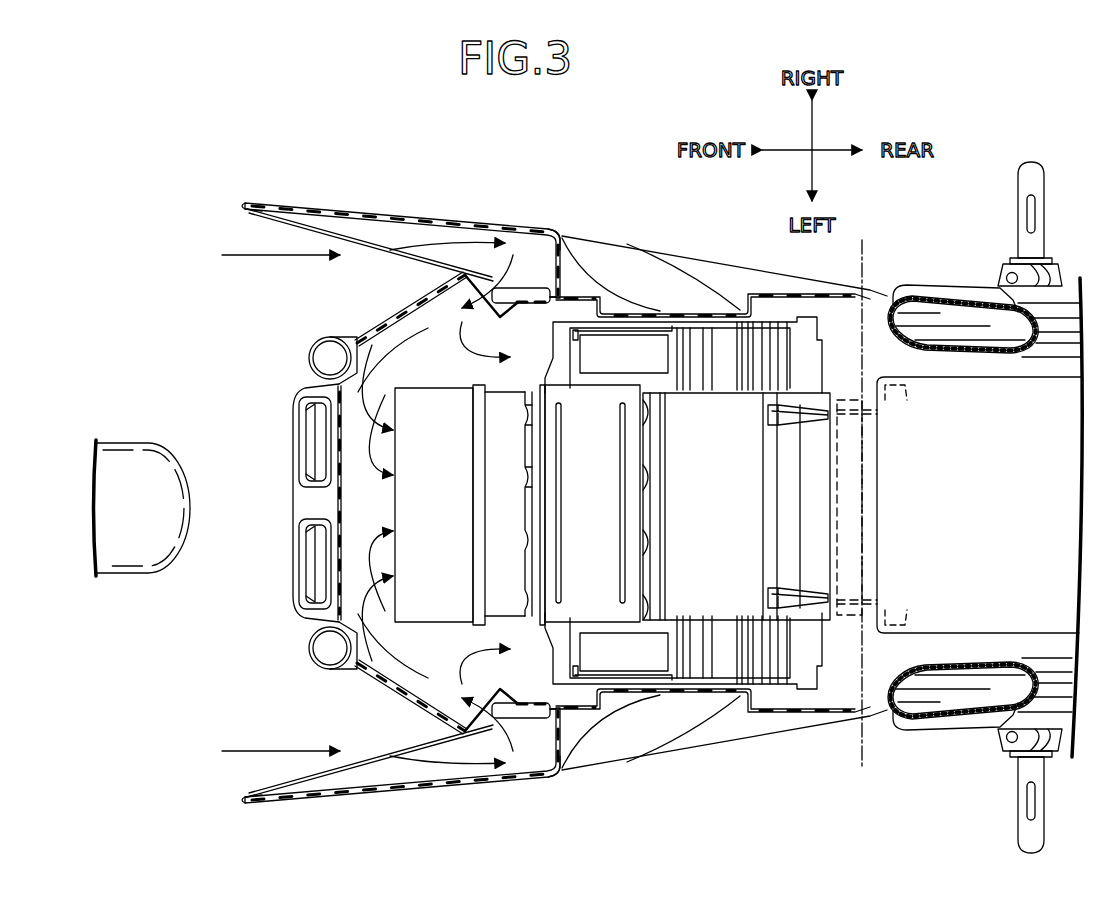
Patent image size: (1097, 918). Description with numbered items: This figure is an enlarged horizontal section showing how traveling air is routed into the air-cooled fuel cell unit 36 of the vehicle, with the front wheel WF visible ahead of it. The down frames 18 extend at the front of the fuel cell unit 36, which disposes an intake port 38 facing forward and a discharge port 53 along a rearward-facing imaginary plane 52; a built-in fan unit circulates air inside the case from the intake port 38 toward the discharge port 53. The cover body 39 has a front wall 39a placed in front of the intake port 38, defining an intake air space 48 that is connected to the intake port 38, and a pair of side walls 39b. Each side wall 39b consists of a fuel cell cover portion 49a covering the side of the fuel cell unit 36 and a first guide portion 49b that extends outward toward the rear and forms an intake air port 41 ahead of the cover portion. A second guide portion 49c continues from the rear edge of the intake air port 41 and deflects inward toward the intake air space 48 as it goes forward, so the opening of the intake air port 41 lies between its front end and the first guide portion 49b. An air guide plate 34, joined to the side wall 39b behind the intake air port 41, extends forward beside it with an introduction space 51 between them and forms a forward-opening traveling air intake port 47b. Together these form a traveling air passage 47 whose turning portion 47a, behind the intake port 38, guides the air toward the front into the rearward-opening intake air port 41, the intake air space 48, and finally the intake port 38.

The air guide plate 34 is at (420, 212).
The traveling air passage 47 is at (372, 278).
The turning portion 47a is at (523, 252).
The traveling air intake port 47b is at (262, 210).
The intake air port 41 is at (470, 270).
The introduction space 51 is at (556, 273).
The side wall 39b is at (378, 322).
The fuel cell cover portion 49a is at (724, 518).
The first guide portion 49b is at (374, 511).
The second guide portion 49c is at (494, 310).
The imaginary plane 52 is at (870, 262).
The down frame 18 is at (310, 343).
The cover body 39 is at (291, 430).
The front wall 39a is at (343, 592).
The intake port 38 is at (338, 605).
The front wheel WF is at (128, 443).
The intake air space 48 is at (381, 509).
The fuel cell unit 36 is at (606, 511).
The discharge port 53 is at (858, 558).